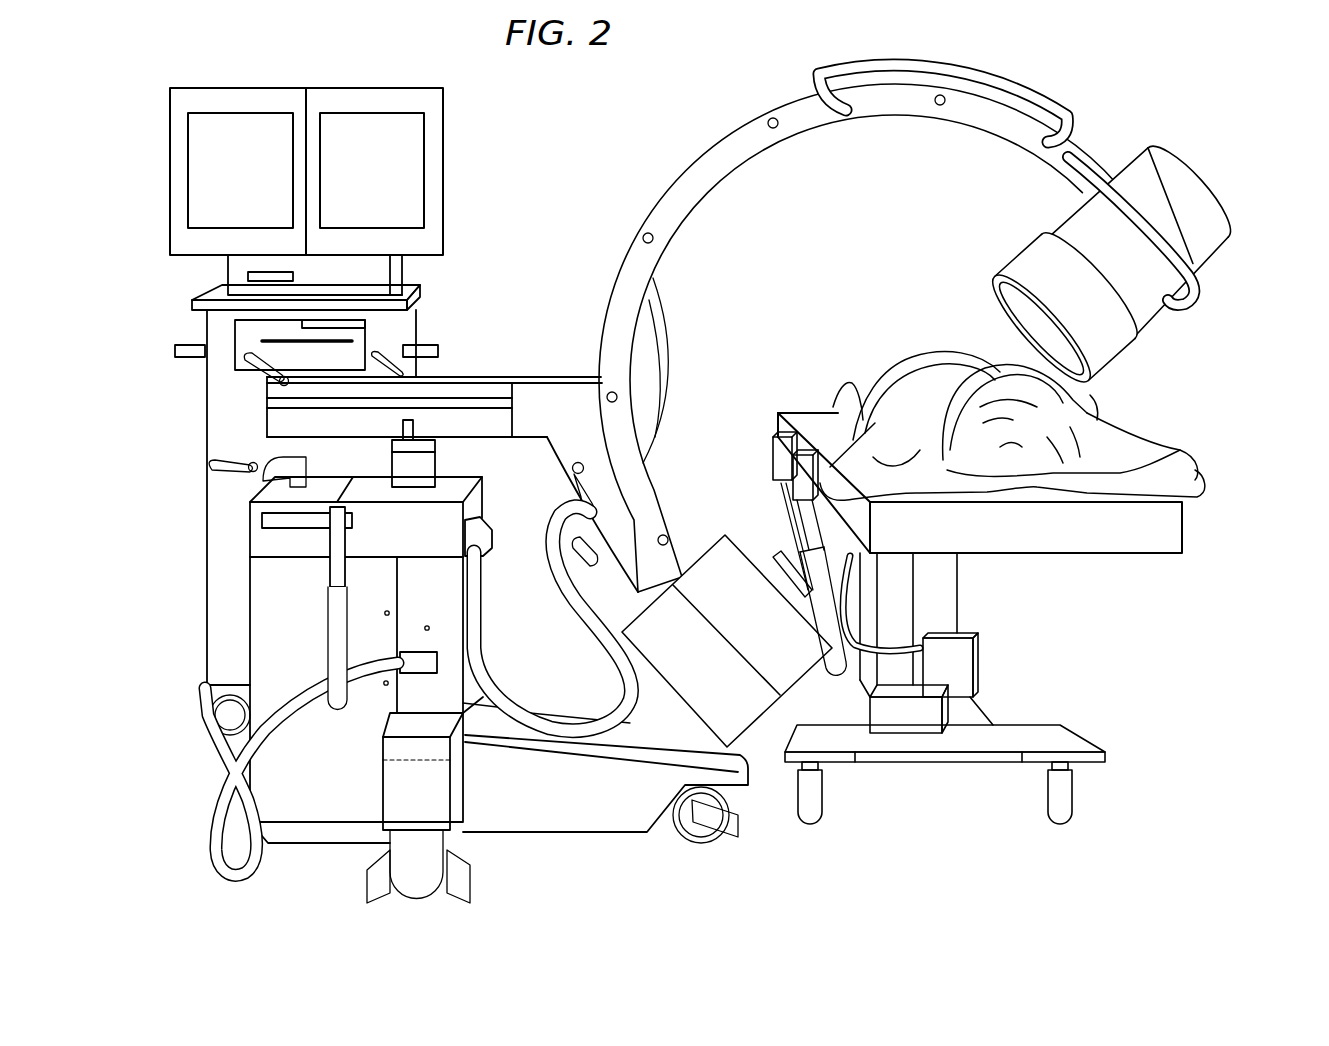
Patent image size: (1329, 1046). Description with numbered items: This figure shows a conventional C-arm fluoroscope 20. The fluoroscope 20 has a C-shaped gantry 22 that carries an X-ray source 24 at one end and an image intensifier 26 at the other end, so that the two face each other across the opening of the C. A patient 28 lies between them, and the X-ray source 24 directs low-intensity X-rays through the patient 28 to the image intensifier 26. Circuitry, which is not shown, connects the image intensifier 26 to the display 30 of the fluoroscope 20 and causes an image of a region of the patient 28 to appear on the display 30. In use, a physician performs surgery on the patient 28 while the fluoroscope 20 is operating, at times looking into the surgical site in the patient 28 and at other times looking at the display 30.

The C-arm fluoroscope 20 is at (1194, 680).
The C-shaped gantry 22 is at (727, 163).
The X-ray source 24 is at (709, 683).
The image intensifier 26 is at (1136, 267).
The patient 28 is at (1083, 425).
The display 30 is at (248, 177).